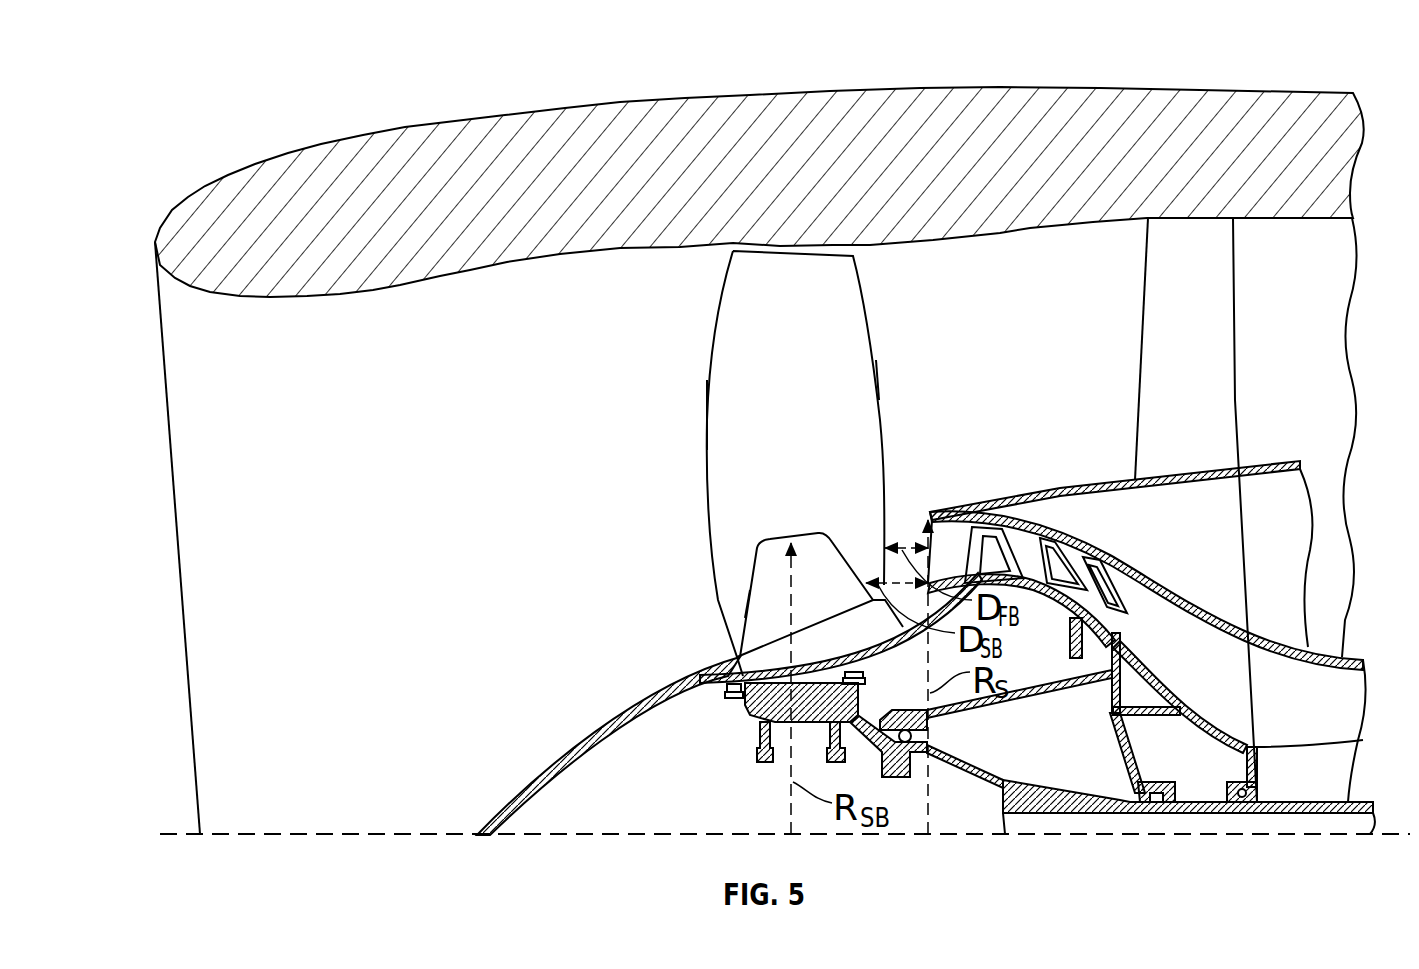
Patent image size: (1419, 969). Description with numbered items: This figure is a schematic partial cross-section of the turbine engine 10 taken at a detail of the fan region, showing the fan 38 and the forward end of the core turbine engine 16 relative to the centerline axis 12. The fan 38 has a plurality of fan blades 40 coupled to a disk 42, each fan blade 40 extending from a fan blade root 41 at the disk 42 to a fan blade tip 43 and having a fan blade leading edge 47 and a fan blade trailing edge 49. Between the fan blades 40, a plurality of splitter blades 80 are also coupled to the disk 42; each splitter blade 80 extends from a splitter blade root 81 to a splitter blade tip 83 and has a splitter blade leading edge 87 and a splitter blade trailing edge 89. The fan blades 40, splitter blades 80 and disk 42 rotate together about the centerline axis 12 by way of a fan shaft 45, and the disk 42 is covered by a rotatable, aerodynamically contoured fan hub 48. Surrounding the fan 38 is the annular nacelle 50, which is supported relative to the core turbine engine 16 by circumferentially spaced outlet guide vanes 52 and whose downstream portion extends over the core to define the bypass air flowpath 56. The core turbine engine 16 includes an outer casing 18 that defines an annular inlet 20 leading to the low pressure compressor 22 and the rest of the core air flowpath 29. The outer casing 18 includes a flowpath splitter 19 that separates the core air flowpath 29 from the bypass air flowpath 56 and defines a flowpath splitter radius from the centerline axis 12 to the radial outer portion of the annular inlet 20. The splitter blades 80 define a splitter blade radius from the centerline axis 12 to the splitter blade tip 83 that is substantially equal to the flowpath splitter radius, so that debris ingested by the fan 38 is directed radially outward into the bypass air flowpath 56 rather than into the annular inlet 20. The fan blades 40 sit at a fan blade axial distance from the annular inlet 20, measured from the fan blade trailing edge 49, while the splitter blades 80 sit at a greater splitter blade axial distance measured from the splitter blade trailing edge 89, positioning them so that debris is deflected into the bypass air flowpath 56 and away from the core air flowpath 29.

The turbine engine 10 is at (156, 48).
The centerline axis 12 is at (350, 835).
The core turbine engine 16 is at (1112, 467).
The outer casing 18 is at (1263, 460).
The flowpath splitter 19 is at (939, 503).
The annular inlet 20 is at (911, 521).
The low pressure compressor 22 is at (1130, 618).
The core air flowpath 29 is at (1322, 723).
The fan 38 is at (605, 478).
The fan blade 40 is at (733, 326).
The fan blade root 41 is at (728, 700).
The disk 42 is at (745, 712).
The fan blade tip 43 is at (798, 253).
The fan shaft 45 is at (970, 773).
The fan blade leading edge 47 is at (707, 378).
The fan hub 48 is at (573, 750).
The fan blade trailing edge 49 is at (875, 350).
The nacelle 50 is at (523, 123).
The outlet guide vane 52 is at (1235, 300).
The bypass air flowpath 56 is at (1045, 322).
The splitter blade 80 is at (758, 578).
The splitter blade root 81 is at (803, 633).
The splitter blade tip 83 is at (766, 532).
The splitter blade leading edge 87 is at (745, 618).
The splitter blade trailing edge 89 is at (831, 538).